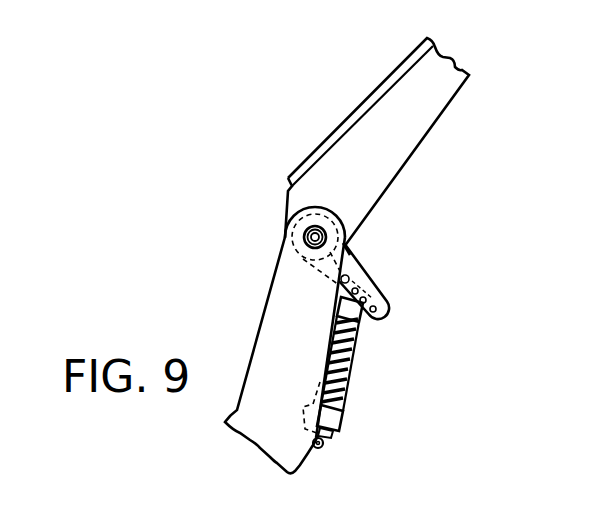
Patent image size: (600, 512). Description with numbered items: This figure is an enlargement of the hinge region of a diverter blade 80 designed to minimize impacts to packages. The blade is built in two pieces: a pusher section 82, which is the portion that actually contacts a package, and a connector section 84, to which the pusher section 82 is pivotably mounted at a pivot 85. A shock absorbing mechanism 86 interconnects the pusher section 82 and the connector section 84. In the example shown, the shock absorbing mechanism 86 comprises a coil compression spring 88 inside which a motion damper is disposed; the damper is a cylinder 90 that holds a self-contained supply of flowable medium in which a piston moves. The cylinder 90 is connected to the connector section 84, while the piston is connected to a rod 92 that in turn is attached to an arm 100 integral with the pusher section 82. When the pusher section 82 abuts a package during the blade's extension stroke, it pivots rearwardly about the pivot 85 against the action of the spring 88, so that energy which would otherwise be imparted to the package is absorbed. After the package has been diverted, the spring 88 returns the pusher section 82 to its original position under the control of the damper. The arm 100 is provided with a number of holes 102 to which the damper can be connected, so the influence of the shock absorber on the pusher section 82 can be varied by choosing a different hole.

The diverter blade 80 is at (270, 197).
The pusher section 82 is at (383, 83).
The connector section 84 is at (267, 307).
The pivot 85 is at (304, 238).
The shock absorbing mechanism 86 is at (354, 369).
The coil compression spring 88 is at (360, 336).
The cylinder 90 is at (337, 404).
The rod 92 is at (368, 300).
The arm 100 is at (346, 256).
The holes 102 is at (349, 278).